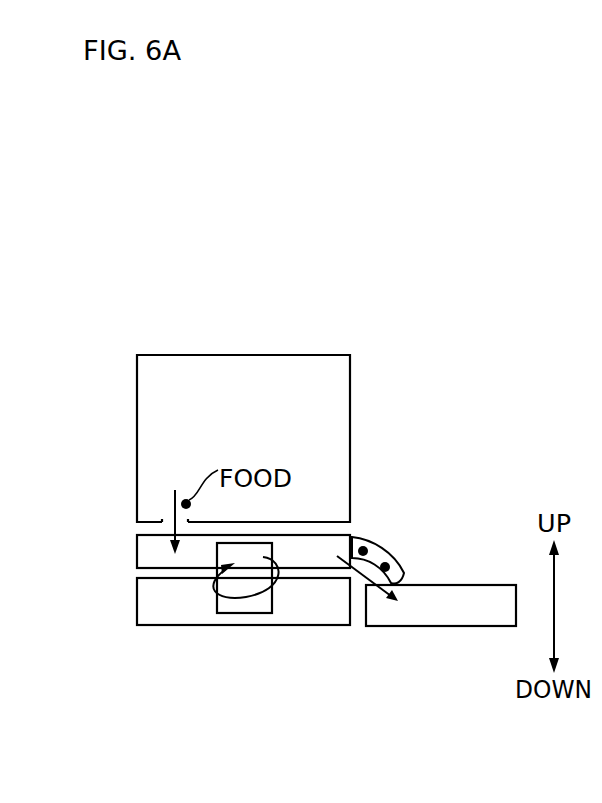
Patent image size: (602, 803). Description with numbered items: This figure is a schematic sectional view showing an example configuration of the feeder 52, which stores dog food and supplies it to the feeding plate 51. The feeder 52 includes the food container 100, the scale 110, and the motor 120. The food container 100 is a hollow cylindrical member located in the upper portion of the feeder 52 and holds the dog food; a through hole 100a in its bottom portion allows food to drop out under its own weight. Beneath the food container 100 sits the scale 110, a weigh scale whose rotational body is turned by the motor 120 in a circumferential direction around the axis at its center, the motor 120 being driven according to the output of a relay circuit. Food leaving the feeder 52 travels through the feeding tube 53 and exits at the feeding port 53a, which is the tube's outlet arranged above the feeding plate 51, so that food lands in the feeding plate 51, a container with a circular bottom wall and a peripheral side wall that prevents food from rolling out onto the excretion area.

The feeder 52 is at (130, 333).
The food container 100 is at (352, 410).
The through hole 100a is at (168, 522).
The scale 110 is at (352, 537).
The motor 120 is at (230, 613).
The feeding tube 53 is at (378, 548).
The feeding port 53a is at (400, 579).
The feeding plate 51 is at (465, 626).